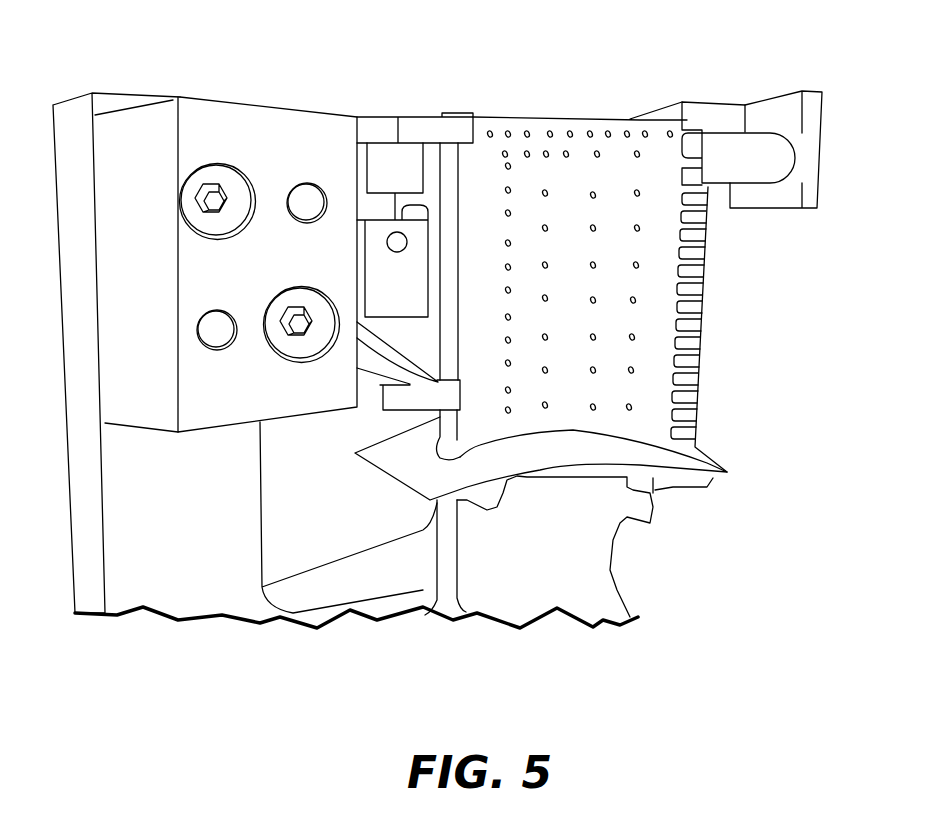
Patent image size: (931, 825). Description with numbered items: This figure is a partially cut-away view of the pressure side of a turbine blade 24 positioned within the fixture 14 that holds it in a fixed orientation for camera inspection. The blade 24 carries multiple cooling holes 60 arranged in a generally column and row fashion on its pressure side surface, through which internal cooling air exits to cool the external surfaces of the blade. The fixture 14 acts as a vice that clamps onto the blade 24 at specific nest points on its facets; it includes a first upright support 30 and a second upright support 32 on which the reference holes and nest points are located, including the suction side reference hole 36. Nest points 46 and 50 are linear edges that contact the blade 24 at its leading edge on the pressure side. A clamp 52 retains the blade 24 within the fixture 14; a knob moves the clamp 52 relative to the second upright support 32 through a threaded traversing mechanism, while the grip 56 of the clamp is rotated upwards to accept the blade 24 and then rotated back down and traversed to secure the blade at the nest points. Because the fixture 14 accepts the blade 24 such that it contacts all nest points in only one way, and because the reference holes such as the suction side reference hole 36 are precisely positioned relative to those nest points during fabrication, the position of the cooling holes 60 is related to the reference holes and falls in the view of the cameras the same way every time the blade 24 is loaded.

The fixture 14 is at (190, 568).
The turbine blade 24 is at (563, 128).
The first upright support 30 is at (77, 108).
The second upright support 32 is at (667, 115).
The suction side reference hole 36 is at (394, 240).
The nest point 46 is at (474, 146).
The nest point 50 is at (466, 410).
The clamp 52 is at (815, 105).
The grip 56 is at (752, 162).
The cooling holes 60 is at (503, 118).